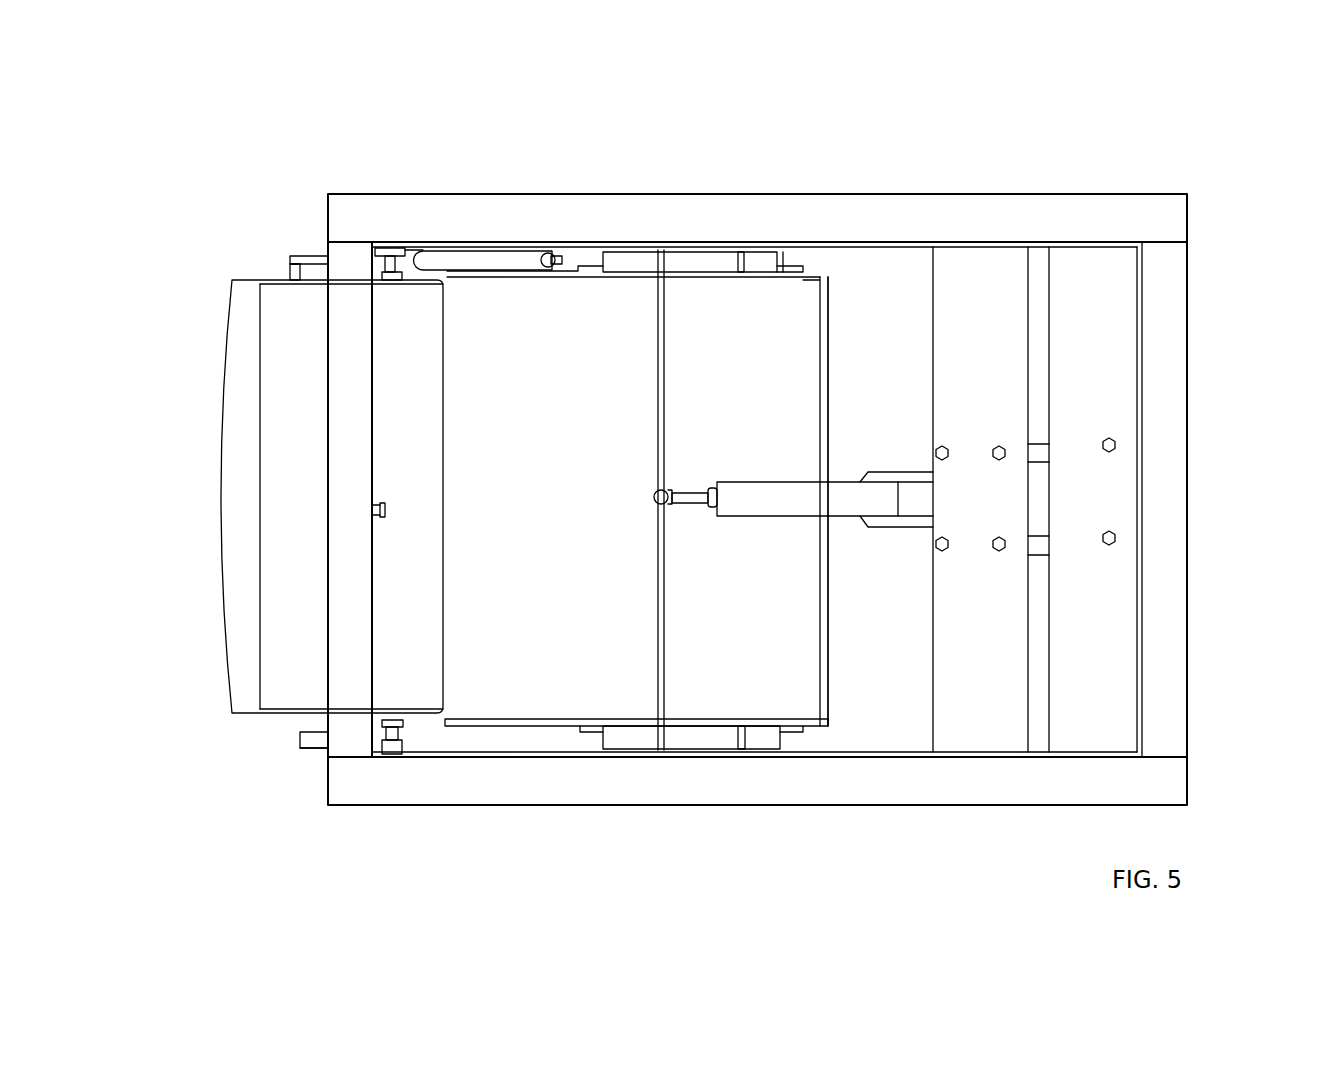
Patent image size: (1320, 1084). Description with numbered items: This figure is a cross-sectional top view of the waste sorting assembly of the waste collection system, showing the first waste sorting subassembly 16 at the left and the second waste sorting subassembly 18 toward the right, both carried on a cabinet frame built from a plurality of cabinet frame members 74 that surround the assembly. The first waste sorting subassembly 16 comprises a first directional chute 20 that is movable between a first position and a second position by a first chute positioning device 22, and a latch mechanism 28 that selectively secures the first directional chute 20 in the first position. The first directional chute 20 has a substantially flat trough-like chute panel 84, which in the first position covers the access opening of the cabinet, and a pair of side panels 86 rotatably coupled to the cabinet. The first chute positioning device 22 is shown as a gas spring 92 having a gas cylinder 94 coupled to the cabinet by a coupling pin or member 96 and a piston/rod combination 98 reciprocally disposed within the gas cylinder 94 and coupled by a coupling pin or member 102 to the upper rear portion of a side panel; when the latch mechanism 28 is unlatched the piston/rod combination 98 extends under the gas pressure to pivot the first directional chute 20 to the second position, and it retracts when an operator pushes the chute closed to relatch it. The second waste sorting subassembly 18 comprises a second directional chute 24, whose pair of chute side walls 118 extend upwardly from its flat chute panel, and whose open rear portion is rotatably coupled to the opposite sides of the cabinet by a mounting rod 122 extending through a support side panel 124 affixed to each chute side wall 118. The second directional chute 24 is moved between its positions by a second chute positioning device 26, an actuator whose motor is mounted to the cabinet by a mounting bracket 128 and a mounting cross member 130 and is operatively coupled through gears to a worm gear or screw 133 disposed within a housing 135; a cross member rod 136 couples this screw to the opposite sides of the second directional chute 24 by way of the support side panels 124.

The first waste sorting subassembly 16 is at (215, 265).
The second waste sorting subassembly 18 is at (855, 720).
The first directional chute 20 is at (275, 742).
The first chute positioning device 22 is at (470, 247).
The second directional chute 24 is at (548, 738).
The second chute positioning device 26 is at (793, 479).
The latch mechanism 28 is at (308, 755).
The cabinet frame member 74 is at (920, 212).
The chute panel 84 is at (305, 335).
The side panel 86 is at (390, 246).
The gas spring 92 is at (422, 247).
The gas cylinder 94 is at (498, 254).
The coupling pin or member 96 is at (556, 256).
The piston/rod combination 98 is at (308, 256).
The coupling pin or member 102 is at (288, 262).
The chute side wall 118 is at (820, 282).
The mounting rod 122 is at (740, 749).
The support side panel 124 is at (640, 252).
The mounting bracket 128 is at (905, 474).
The mounting cross member 130 is at (990, 355).
The worm gear or screw 133 is at (688, 494).
The housing 135 is at (770, 510).
The cross member rod 136 is at (657, 465).